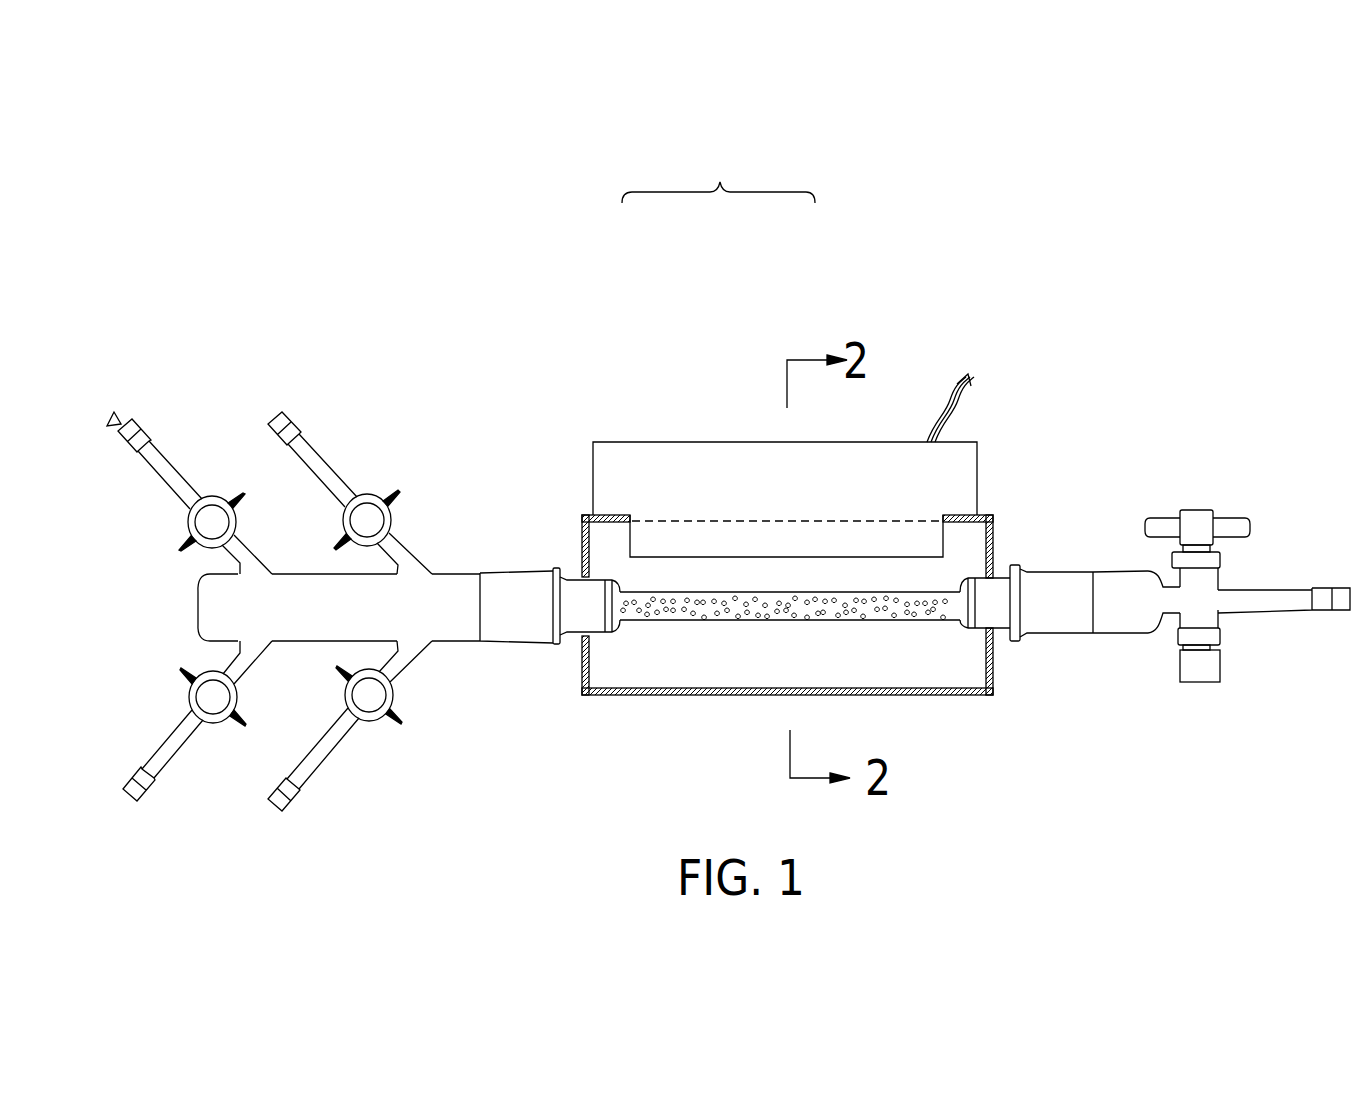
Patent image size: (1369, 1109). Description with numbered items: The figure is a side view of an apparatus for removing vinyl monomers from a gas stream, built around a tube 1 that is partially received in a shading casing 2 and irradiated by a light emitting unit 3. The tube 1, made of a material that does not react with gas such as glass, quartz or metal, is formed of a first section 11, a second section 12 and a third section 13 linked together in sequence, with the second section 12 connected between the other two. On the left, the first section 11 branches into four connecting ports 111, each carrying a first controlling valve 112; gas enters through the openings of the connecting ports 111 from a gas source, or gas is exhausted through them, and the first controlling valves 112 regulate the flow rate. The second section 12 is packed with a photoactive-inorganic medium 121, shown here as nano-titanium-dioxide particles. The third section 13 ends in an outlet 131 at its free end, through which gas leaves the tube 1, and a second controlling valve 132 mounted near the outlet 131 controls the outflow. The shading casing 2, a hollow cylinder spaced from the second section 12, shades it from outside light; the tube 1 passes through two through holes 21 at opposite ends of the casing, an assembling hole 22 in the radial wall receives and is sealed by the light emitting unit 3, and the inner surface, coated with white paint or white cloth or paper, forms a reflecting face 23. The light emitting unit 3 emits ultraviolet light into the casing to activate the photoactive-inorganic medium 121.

The tube 1 is at (712, 172).
The first section 11 is at (506, 595).
The connecting port 111 is at (168, 450).
The first controlling valve 112 is at (212, 510).
The second section 12 is at (706, 597).
The photoactive-inorganic medium 121 is at (716, 600).
The third section 13 is at (1120, 585).
The outlet 131 is at (1265, 597).
The second controlling valve 132 is at (1202, 520).
The shading casing 2 is at (572, 522).
The through hole 21 is at (576, 636).
The assembling hole 22 is at (895, 522).
The reflecting face 23 is at (948, 685).
The light emitting unit 3 is at (660, 450).